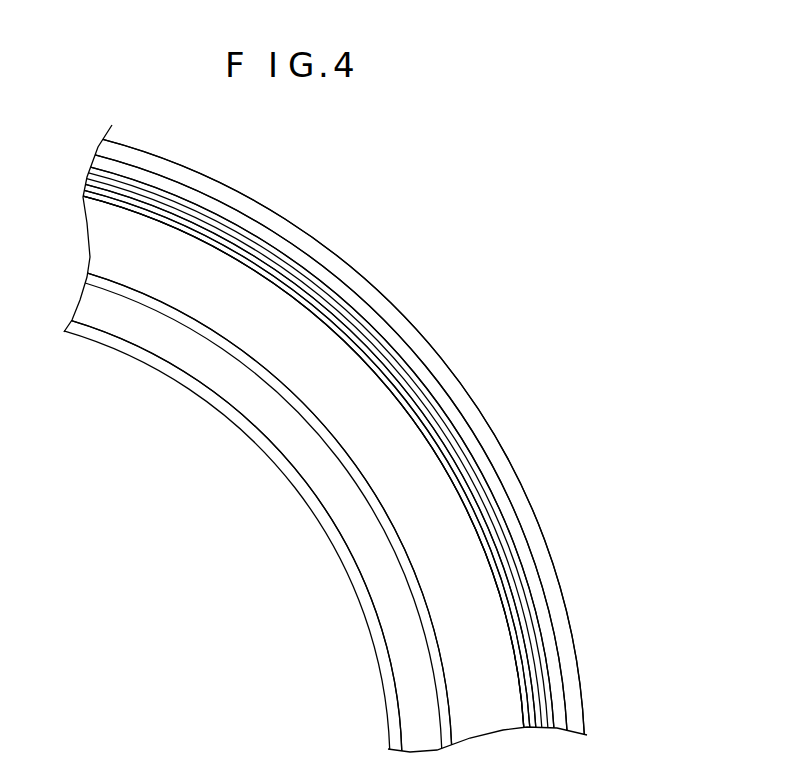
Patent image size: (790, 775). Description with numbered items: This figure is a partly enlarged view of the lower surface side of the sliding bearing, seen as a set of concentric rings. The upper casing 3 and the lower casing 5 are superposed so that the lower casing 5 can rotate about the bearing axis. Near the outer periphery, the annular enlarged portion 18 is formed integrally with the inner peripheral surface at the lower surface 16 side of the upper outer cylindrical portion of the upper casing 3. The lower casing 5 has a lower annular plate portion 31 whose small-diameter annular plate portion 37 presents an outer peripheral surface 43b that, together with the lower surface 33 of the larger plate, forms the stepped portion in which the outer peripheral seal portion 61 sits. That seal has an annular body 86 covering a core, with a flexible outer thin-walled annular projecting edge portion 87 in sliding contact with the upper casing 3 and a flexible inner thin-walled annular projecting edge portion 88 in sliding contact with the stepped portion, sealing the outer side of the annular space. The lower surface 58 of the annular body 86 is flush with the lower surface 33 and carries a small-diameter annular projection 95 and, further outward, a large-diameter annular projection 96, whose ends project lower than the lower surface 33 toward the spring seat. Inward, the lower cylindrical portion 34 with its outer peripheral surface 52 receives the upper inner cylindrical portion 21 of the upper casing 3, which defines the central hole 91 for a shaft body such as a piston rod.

The upper casing 3 is at (235, 197).
The lower casing 5 is at (278, 298).
The lower surface 16 is at (443, 373).
The annular enlarged portion 18 is at (468, 410).
The upper inner cylindrical portion 21 is at (340, 538).
The lower annular plate portion 31 is at (315, 325).
The lower surface 33 is at (330, 338).
The lower cylindrical portion 34 is at (385, 583).
The small-diameter annular plate portion 37 is at (343, 352).
The outer peripheral surface 43b is at (520, 675).
The outer peripheral surface 52 is at (412, 555).
The lower surface 58 is at (530, 610).
The outer peripheral seal portion 61 is at (480, 458).
The annular body 86 is at (503, 513).
The outer thin-walled annular projecting edge portion 87 is at (492, 483).
The inner thin-walled annular projecting edge portion 88 is at (522, 653).
The central hole 91 is at (183, 617).
The small-diameter annular projection 95 is at (522, 583).
The large-diameter annular projection 96 is at (508, 545).